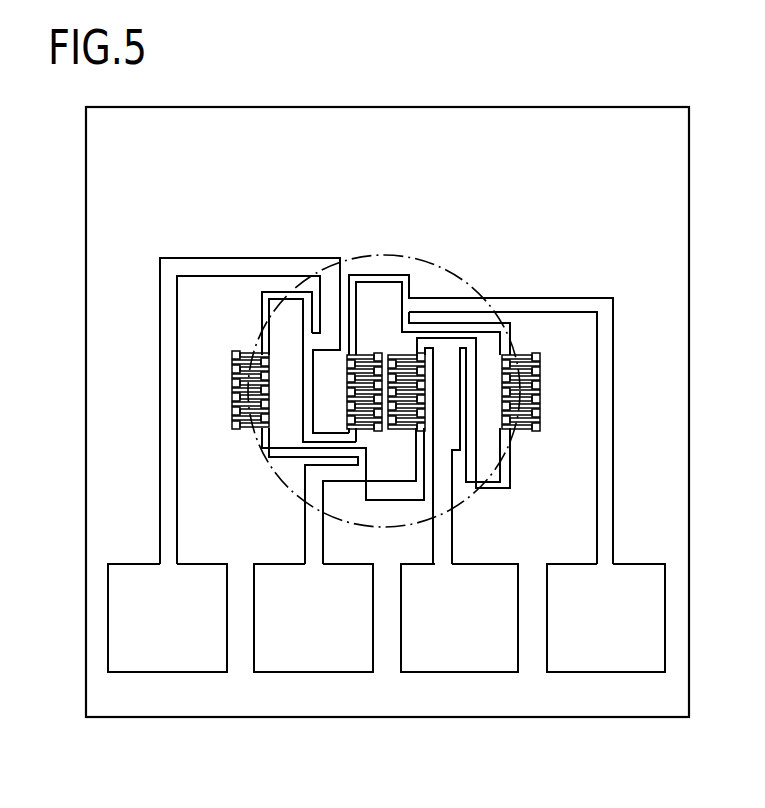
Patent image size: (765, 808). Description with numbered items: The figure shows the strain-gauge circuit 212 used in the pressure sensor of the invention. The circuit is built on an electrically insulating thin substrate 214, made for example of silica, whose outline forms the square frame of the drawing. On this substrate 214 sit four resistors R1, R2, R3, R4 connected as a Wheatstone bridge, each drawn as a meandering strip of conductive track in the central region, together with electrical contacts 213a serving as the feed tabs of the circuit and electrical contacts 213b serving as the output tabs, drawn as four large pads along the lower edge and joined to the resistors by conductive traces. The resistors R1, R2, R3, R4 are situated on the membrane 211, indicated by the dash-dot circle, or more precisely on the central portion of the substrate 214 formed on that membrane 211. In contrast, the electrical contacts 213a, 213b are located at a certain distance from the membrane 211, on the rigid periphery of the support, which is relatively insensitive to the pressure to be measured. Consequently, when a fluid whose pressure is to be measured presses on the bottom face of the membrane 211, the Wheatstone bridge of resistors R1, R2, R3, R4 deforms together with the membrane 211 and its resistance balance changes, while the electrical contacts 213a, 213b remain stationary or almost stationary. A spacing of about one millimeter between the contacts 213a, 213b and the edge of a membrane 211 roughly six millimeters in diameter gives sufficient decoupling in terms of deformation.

The strain-gauge circuit 212 is at (524, 80).
The substrate 214 is at (628, 130).
The membrane 211 is at (427, 264).
The electrical contacts 213a is at (297, 638).
The electrical contacts 213b is at (165, 637).
The resistor R1 is at (540, 395).
The resistor R2 is at (426, 382).
The resistor R3 is at (355, 355).
The resistor R4 is at (232, 385).